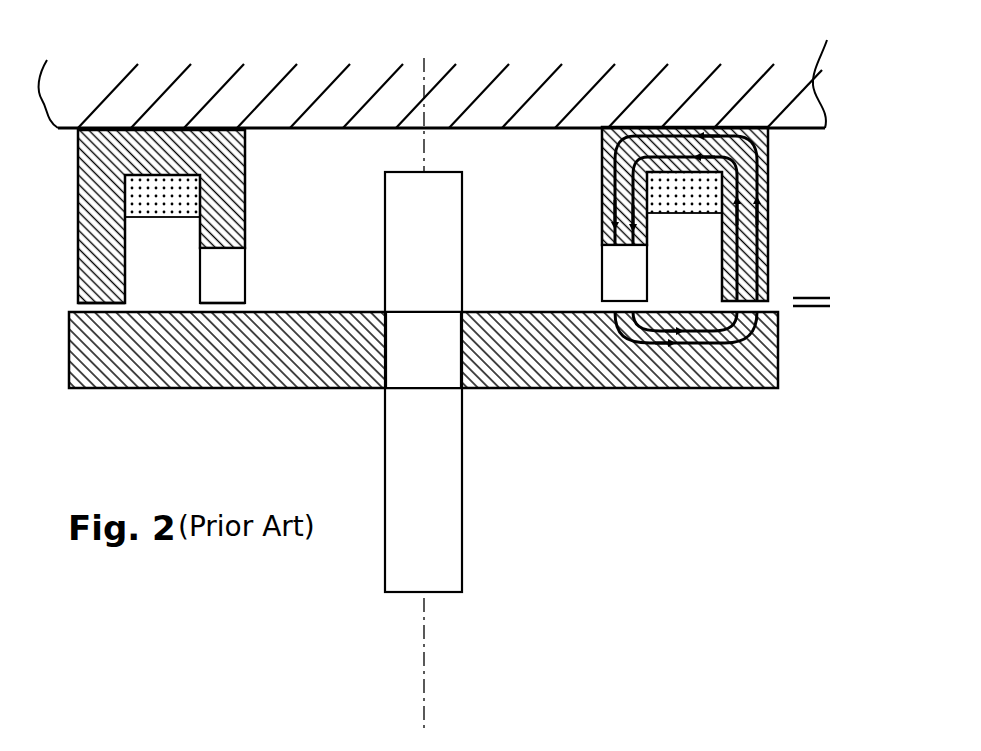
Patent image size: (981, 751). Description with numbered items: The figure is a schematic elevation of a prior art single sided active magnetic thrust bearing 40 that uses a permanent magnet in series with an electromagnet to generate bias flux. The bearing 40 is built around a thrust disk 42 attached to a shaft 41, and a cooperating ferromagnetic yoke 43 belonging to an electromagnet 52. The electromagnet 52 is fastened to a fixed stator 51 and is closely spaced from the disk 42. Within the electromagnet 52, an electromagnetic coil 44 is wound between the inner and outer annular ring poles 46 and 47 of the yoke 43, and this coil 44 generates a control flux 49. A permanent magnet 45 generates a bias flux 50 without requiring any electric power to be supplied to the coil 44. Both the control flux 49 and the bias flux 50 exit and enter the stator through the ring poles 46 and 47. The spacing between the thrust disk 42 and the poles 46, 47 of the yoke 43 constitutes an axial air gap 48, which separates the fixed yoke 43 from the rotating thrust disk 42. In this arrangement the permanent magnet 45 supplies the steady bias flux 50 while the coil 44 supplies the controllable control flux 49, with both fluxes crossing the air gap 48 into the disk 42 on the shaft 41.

The active magnetic thrust bearing 40 is at (233, 52).
The shaft 41 is at (448, 172).
The thrust disk 42 is at (542, 312).
The ferromagnetic yoke 43 is at (245, 141).
The electromagnetic coil 44 is at (153, 175).
The permanent magnet 45 is at (245, 268).
The inner annular ring pole 46 is at (95, 311).
The outer annular ring pole 47 is at (228, 313).
The axial air gap 48 is at (842, 302).
The control flux 49 is at (760, 246).
The bias flux 50 is at (735, 250).
The fixed stator 51 is at (711, 199).
The electromagnet 52 is at (169, 208).